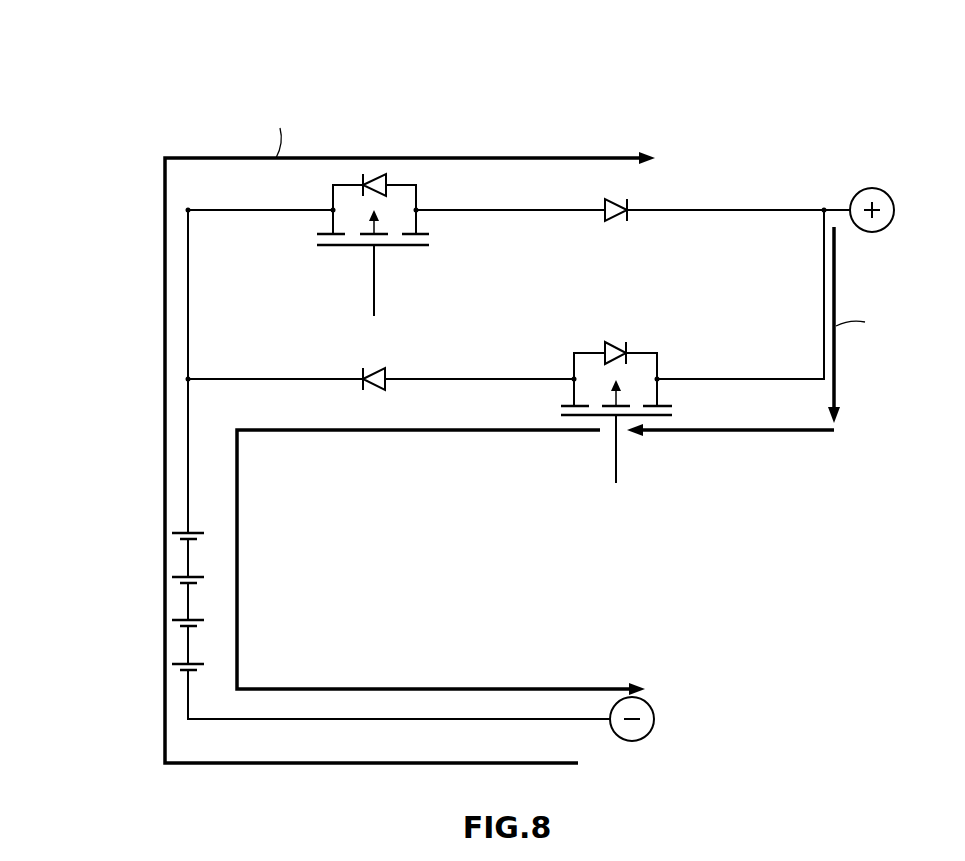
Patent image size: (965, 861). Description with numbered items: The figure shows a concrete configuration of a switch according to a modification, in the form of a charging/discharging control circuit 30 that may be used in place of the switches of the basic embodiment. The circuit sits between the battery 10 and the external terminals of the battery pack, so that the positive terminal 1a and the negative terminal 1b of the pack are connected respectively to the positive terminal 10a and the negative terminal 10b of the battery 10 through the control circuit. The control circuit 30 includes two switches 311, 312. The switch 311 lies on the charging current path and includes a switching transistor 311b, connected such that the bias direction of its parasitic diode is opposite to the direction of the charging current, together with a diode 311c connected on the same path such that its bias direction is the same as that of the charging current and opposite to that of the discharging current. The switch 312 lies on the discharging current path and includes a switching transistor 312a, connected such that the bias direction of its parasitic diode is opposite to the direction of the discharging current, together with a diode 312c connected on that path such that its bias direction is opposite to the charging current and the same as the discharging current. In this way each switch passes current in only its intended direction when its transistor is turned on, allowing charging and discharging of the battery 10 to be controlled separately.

The charging/discharging control circuit 30 is at (756, 110).
The switch 312 is at (598, 116).
The switching transistor 312a is at (390, 177).
The diode 312c is at (604, 200).
The switch 311 is at (598, 475).
The switching transistor 311b is at (571, 418).
The diode 311c is at (387, 390).
The battery 10 is at (132, 604).
The positive terminal 10a is at (186, 532).
The negative terminal 10b is at (187, 671).
The positive terminal 1a is at (894, 207).
The negative terminal 1b is at (654, 718).